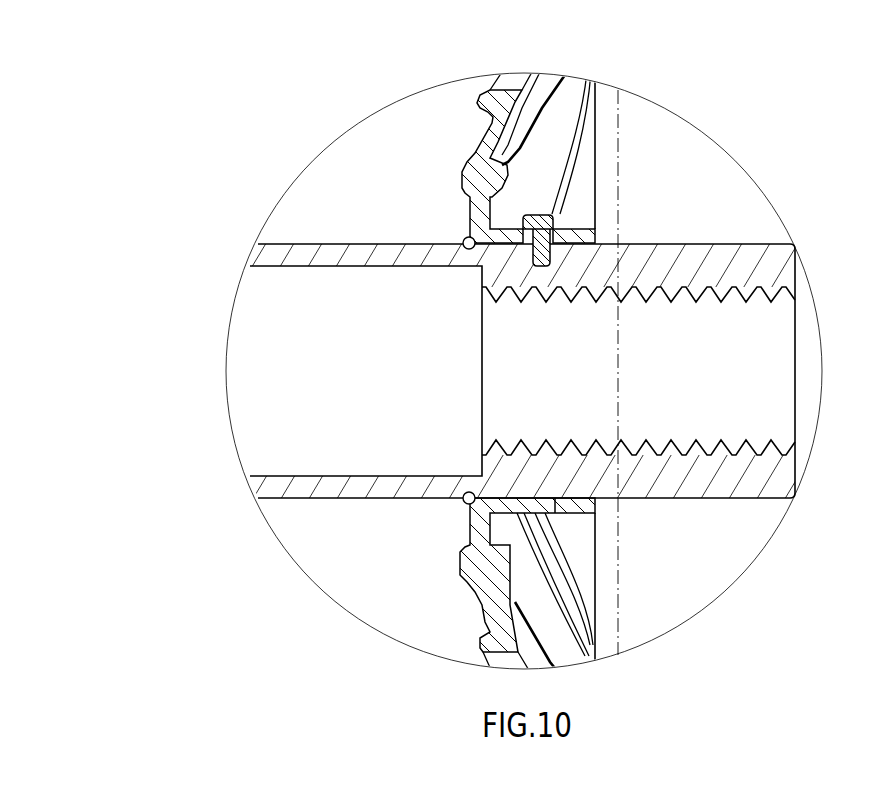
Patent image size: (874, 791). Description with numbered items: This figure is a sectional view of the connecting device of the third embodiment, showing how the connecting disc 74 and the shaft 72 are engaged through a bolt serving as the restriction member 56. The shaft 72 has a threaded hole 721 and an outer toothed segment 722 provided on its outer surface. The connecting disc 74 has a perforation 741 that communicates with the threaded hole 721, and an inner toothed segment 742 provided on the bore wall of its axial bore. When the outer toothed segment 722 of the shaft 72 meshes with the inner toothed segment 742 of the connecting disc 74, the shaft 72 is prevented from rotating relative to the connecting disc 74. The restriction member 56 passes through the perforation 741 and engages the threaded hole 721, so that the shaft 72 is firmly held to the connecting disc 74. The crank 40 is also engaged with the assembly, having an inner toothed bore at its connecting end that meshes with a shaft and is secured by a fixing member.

The crank 40 is at (660, 154).
The restriction member 56 is at (527, 215).
The shaft 72 is at (314, 238).
The threaded hole 721 is at (533, 250).
The outer toothed segment 722 is at (652, 263).
The connecting disc 74 is at (468, 612).
The perforation 741 is at (563, 232).
The inner toothed segment 742 is at (487, 240).